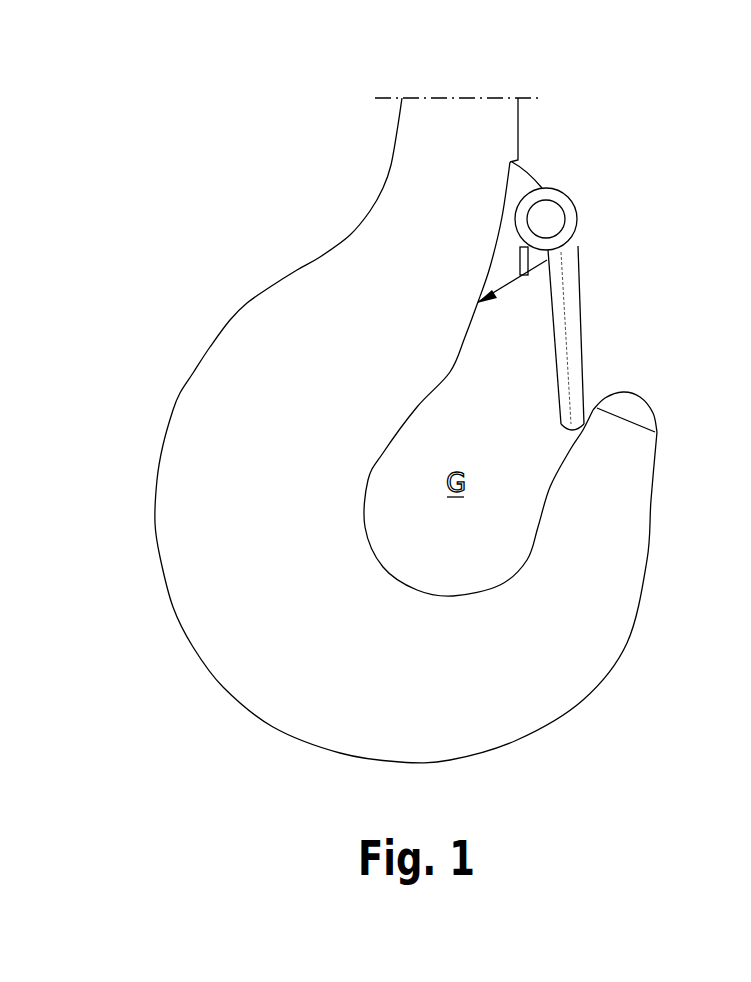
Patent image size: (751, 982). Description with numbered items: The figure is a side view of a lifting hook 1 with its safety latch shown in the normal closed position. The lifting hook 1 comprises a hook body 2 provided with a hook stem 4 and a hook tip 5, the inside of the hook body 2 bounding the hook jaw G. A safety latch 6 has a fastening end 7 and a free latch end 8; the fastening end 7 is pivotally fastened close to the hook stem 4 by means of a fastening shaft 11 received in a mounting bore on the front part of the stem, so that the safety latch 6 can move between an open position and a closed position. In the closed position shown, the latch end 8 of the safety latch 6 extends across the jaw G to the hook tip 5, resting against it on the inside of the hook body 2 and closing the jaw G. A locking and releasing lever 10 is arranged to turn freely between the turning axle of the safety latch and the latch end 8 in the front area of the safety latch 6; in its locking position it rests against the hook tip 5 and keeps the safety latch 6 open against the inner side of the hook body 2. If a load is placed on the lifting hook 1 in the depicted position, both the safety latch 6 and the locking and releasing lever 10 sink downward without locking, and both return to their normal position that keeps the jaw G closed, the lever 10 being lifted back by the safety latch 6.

The lifting hook 1 is at (411, 430).
The hook body 2 is at (172, 398).
The hook stem 4 is at (380, 190).
The hook tip 5 is at (643, 400).
The safety latch 6 is at (584, 271).
The fastening end 7 is at (565, 187).
The latch end 8 is at (560, 410).
The locking and releasing lever 10 is at (575, 330).
The fastening shaft 11 is at (549, 218).